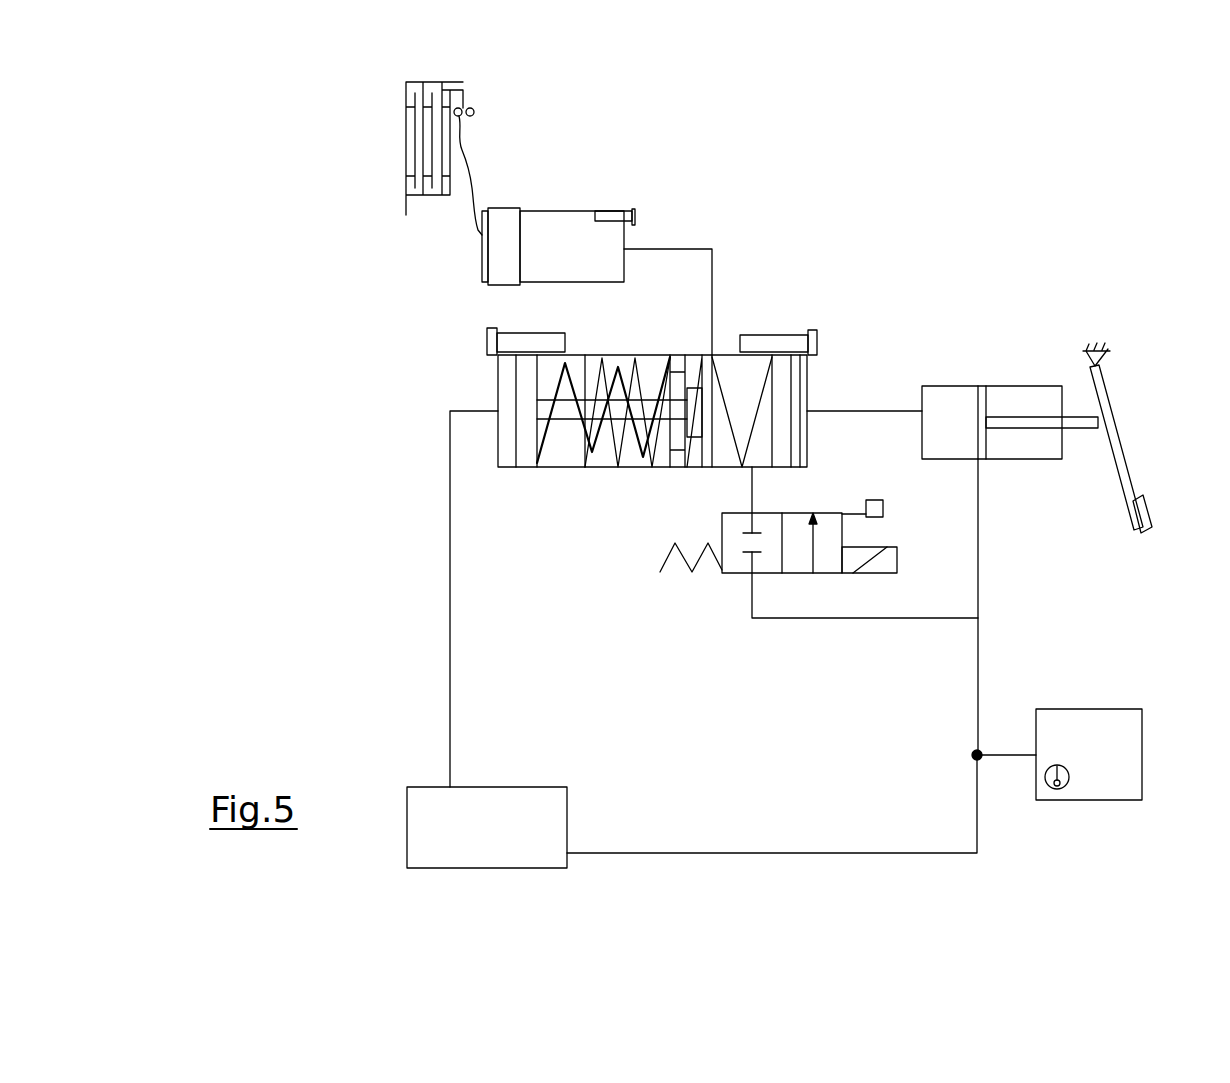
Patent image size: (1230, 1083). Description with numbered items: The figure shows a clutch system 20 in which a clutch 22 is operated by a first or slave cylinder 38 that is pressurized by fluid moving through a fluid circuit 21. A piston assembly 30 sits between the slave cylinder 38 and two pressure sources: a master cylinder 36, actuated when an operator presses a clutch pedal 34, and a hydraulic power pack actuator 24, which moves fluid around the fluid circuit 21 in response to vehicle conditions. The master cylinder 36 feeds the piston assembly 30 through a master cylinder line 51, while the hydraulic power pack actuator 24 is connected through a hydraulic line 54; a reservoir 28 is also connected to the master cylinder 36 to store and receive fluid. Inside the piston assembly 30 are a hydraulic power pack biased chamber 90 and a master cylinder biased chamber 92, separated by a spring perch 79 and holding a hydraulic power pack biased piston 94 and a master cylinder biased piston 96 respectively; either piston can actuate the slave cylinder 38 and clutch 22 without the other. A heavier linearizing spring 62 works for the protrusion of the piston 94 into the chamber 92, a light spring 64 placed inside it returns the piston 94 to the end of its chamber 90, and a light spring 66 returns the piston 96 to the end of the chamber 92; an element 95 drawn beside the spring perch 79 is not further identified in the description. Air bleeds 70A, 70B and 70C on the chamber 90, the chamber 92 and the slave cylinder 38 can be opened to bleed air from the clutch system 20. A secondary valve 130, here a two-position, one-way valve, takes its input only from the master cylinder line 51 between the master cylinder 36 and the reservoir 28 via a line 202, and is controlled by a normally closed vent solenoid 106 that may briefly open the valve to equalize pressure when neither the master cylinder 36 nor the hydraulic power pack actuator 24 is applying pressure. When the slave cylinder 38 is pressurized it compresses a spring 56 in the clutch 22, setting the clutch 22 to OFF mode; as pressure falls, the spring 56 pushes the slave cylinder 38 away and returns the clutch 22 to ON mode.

The clutch system 20 is at (992, 325).
The fluid circuit 21 is at (875, 411).
The clutch 22 is at (450, 80).
The hydraulic power pack actuator 24 is at (407, 813).
The reservoir 28 is at (1142, 727).
The piston assembly 30 is at (510, 467).
The clutch pedal 34 is at (1123, 458).
The master cylinder 36 is at (925, 386).
The slave cylinder 38 is at (493, 211).
The master cylinder line 51 is at (840, 411).
The hydraulic line 54 is at (450, 522).
The spring 56 is at (470, 142).
The linearizing spring 62 is at (620, 450).
The hydraulic power pack biased chamber light spring 64 is at (590, 447).
The master cylinder biased chamber light spring 66 is at (732, 445).
The air bleed 70A is at (512, 333).
The air bleed 70B is at (780, 335).
The air bleed 70C is at (632, 209).
The spring perch 79 is at (678, 357).
The hydraulic power pack biased chamber 90 is at (648, 357).
The master cylinder biased chamber 92 is at (723, 357).
The hydraulic power pack biased piston 94 is at (568, 422).
The stop 95 is at (688, 357).
The master cylinder biased piston 96 is at (783, 470).
The vent solenoid 106 is at (884, 500).
The secondary valve 130 is at (830, 513).
The line 202 is at (752, 488).